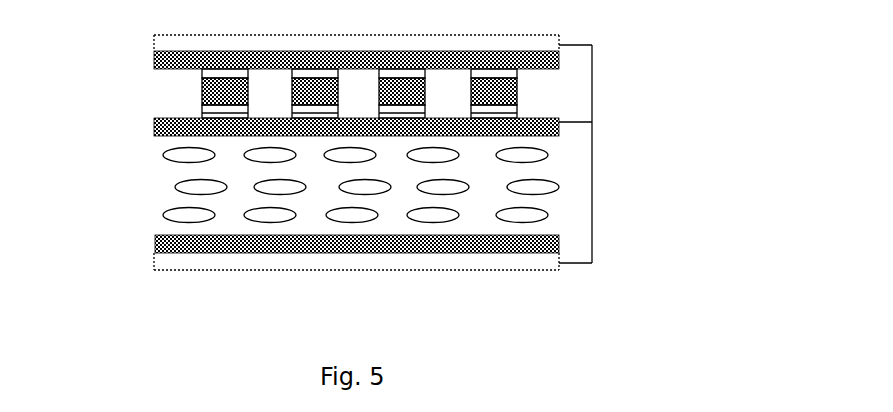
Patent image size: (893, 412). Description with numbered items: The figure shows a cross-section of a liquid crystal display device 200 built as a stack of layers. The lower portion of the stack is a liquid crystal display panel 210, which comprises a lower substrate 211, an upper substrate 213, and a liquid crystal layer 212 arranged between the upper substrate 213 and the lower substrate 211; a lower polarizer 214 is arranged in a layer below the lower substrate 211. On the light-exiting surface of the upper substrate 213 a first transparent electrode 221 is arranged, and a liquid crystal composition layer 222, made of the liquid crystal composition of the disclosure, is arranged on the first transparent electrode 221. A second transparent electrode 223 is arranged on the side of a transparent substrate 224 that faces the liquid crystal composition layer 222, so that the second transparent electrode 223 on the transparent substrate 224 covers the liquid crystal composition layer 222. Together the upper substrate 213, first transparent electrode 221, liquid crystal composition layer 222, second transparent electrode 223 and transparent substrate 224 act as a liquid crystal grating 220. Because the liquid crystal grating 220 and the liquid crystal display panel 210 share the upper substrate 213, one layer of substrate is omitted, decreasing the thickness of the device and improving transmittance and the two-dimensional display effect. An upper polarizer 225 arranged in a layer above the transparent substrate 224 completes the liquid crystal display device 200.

The liquid crystal display device 200 is at (388, 157).
The liquid crystal display panel 210 is at (363, 202).
The lower substrate 211 is at (155, 241).
The liquid crystal layer 212 is at (187, 187).
The upper substrate 213 is at (154, 127).
The lower polarizer 214 is at (167, 268).
The liquid crystal grating 220 is at (361, 84).
The first transparent electrode 221 is at (202, 110).
The liquid crystal composition layer 222 is at (207, 89).
The second transparent electrode 223 is at (225, 73).
The transparent substrate 224 is at (167, 56).
The upper polarizer 225 is at (154, 43).